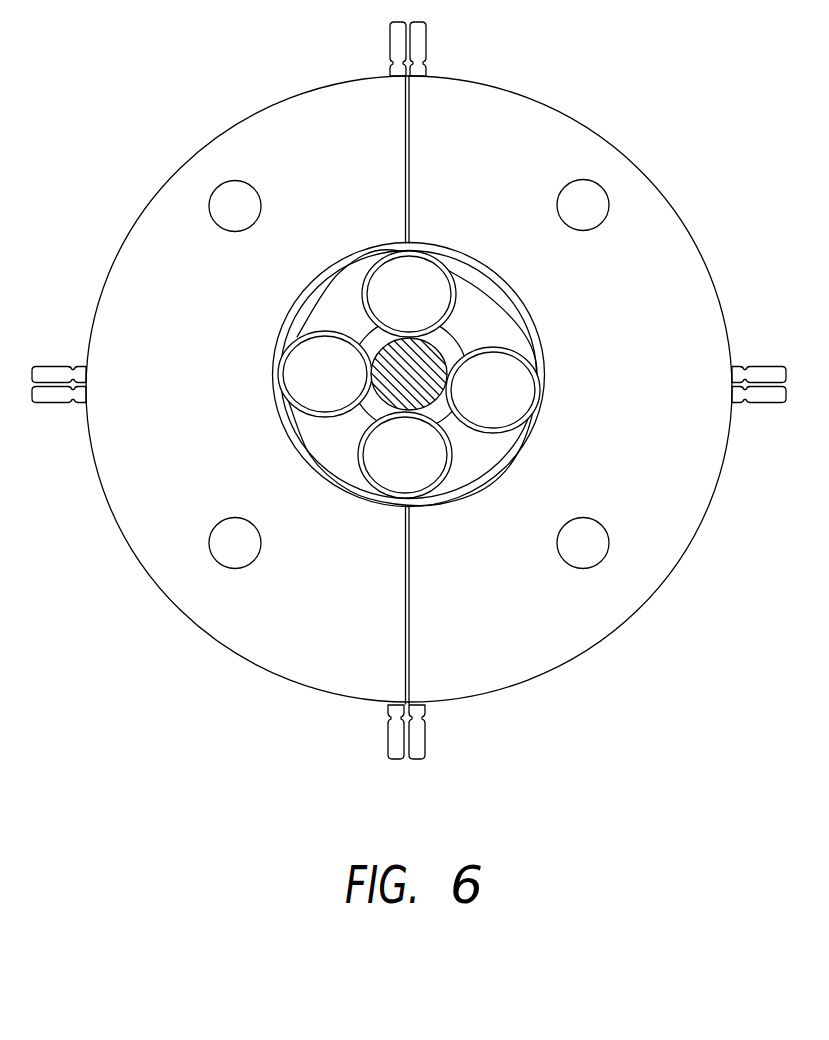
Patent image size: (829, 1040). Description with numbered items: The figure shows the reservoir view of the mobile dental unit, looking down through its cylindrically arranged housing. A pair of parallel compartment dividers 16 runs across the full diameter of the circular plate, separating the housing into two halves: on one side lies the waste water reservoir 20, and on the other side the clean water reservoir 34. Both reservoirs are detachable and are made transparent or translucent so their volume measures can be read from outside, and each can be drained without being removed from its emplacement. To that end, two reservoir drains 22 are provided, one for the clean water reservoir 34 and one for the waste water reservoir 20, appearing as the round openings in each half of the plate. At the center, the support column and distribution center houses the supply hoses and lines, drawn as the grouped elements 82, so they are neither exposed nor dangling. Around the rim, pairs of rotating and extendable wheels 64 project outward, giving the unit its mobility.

The compartment dividers 16 is at (410, 143).
The waste water reservoir 20 is at (543, 647).
The reservoir drains 22 is at (590, 195).
The clean water reservoir 34 is at (273, 648).
The 360 degree rotating and extendable wheels 64 is at (395, 743).
The tubes 82 is at (382, 455).